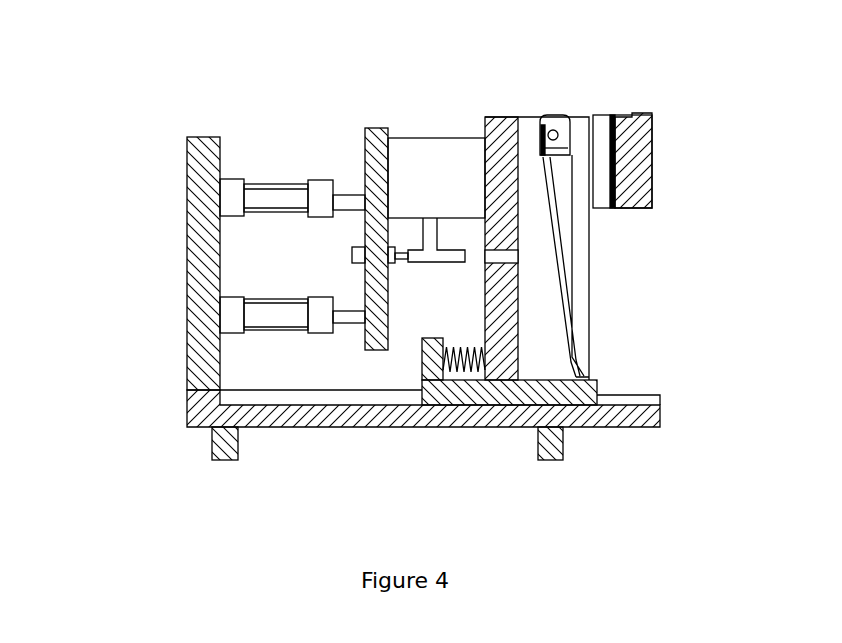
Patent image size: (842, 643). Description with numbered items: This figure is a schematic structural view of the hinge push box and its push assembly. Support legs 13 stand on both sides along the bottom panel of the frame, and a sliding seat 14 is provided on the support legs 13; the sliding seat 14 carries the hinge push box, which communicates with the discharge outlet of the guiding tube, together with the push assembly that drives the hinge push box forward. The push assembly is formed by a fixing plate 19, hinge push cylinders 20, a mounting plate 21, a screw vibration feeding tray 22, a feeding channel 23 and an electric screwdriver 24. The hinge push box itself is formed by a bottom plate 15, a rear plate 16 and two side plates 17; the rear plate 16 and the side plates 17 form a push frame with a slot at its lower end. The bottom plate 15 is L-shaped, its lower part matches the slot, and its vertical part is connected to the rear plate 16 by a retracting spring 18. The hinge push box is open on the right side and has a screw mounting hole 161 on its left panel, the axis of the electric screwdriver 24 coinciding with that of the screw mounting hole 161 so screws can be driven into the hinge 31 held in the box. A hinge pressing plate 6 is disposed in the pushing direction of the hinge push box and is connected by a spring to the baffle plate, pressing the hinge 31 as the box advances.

The hinge pressing plate 6 is at (635, 152).
The support legs 13 is at (213, 440).
The sliding seat 14 is at (392, 421).
The bottom plate 15 is at (490, 405).
The rear plate 16 is at (503, 143).
The screw mounting hole 161 is at (510, 258).
The side plates 17 is at (577, 125).
The retracting spring 18 is at (458, 378).
The fixing plate 19 is at (205, 243).
The hinge push cylinders 20 is at (288, 200).
The mounting plate 21 is at (367, 130).
The screw vibration feeding tray 22 is at (418, 162).
The feeding channel 23 is at (433, 255).
The electric screwdriver 24 is at (362, 255).
The hinge 31 is at (565, 213).